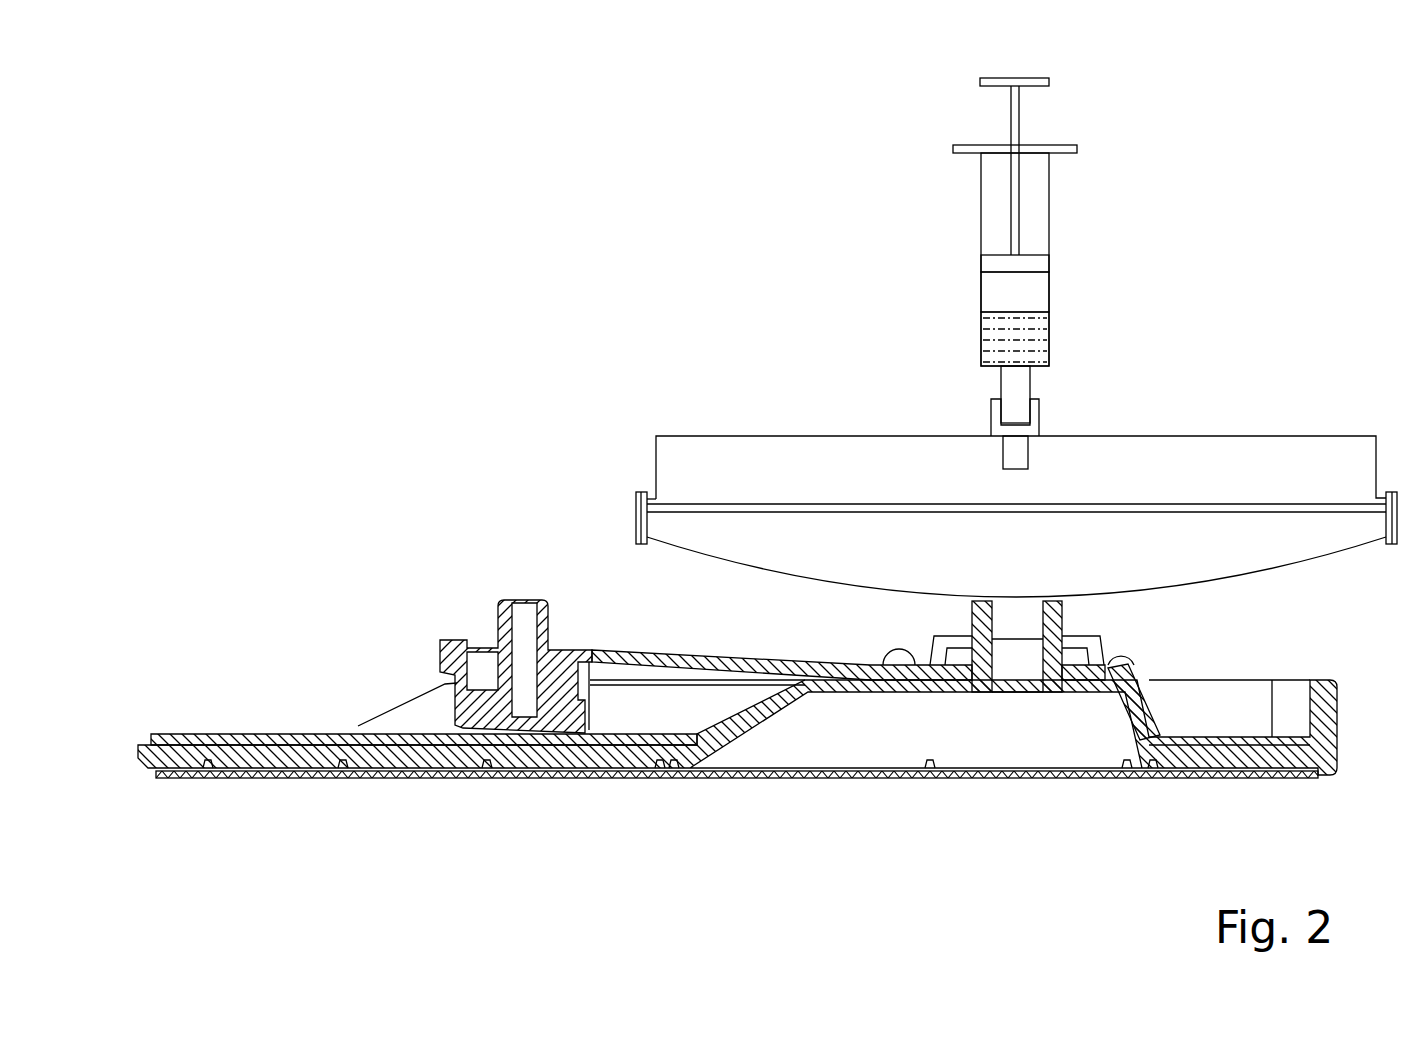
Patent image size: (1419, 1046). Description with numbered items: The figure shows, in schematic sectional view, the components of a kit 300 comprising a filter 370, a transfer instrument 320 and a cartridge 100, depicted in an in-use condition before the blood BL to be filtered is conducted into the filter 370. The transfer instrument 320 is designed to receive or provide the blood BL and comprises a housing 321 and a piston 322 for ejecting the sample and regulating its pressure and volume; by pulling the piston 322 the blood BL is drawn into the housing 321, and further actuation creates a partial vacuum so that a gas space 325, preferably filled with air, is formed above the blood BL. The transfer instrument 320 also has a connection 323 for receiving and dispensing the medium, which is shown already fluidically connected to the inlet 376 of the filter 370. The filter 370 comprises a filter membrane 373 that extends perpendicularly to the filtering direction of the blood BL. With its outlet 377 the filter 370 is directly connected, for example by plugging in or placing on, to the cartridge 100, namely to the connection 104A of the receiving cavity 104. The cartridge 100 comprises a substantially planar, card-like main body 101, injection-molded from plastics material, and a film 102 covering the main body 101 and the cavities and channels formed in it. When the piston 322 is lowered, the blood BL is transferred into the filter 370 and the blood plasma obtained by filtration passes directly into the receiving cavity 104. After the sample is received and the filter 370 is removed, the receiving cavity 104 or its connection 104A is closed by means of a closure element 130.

The kit 300 is at (720, 289).
The transfer instrument 320 is at (1138, 133).
The housing 321 is at (1050, 212).
The piston 322 is at (1042, 262).
The gas space 325 is at (995, 292).
The blood BL is at (1040, 333).
The connection 323 is at (1035, 387).
The inlet 376 is at (1040, 418).
The filter 370 is at (1260, 432).
The filter membrane 373 is at (1325, 510).
The outlet 377 is at (1020, 618).
The cartridge 100 is at (222, 735).
The main body 101 is at (583, 778).
The film 102 is at (300, 778).
The receiving cavity 104 is at (1062, 736).
The connection 104A is at (968, 612).
The closure element 130 is at (490, 611).